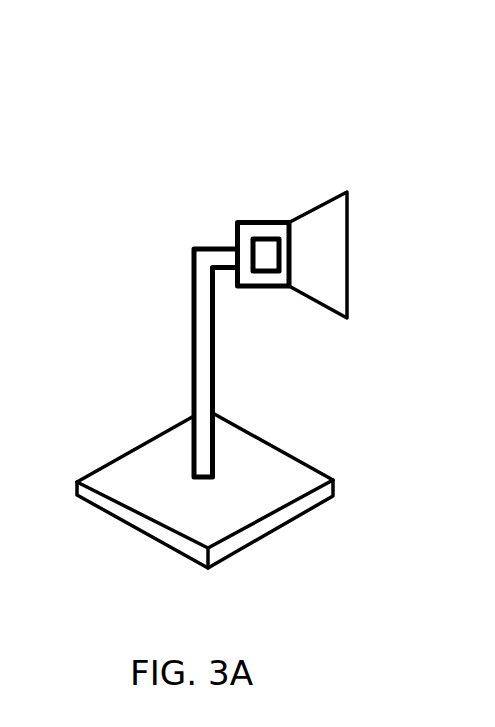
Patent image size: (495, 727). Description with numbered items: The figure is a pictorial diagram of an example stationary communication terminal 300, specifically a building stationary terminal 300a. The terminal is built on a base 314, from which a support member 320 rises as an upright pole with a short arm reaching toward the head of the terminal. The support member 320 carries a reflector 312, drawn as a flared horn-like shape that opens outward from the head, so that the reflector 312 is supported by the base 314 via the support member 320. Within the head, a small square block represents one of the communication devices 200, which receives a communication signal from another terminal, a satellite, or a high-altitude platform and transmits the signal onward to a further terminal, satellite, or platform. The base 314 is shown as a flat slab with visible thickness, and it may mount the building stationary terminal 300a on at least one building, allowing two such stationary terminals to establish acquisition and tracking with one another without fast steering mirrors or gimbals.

The communication terminal 300 is at (153, 95).
The building stationary terminal 300a is at (210, 318).
The communication device 200 is at (264, 237).
The reflector 312 is at (316, 206).
The base 314 is at (312, 459).
The support member 320 is at (193, 360).